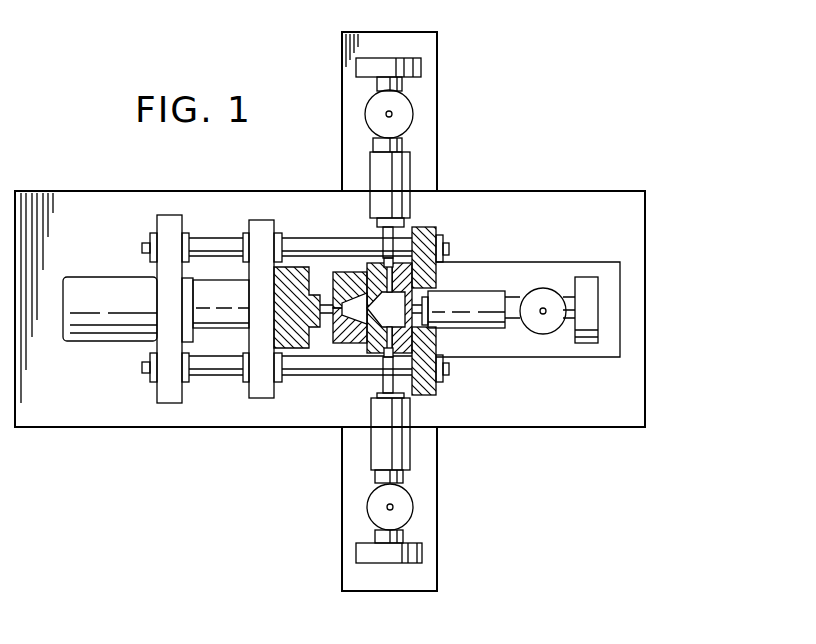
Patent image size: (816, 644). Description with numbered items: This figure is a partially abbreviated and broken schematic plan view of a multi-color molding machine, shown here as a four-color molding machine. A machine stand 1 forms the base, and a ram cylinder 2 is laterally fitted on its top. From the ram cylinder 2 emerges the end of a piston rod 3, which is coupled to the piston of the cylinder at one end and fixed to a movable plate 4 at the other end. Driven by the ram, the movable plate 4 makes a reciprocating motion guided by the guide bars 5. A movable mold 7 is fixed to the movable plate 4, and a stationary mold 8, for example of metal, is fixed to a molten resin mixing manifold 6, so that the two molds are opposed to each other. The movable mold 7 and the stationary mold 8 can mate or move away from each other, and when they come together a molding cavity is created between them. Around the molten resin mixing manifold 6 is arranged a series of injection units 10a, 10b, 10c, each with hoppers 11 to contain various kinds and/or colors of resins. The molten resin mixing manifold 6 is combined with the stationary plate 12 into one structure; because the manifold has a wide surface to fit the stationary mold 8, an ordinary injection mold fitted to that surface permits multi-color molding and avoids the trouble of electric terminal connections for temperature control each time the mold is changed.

The machine stand 1 is at (573, 418).
The ram cylinder 2 is at (97, 333).
The piston rod 3 is at (215, 327).
The movable plate 4 is at (270, 385).
The guide bars 5 is at (215, 248).
The molten resin mixing manifold 6 is at (373, 350).
The movable mold 7 is at (295, 273).
The stationary mold 8 is at (335, 275).
The injection unit 10a is at (592, 302).
The injection unit 10b is at (380, 63).
The injection unit 10c is at (420, 555).
The hoppers 11 is at (408, 113).
The stationary plate 12 is at (436, 387).